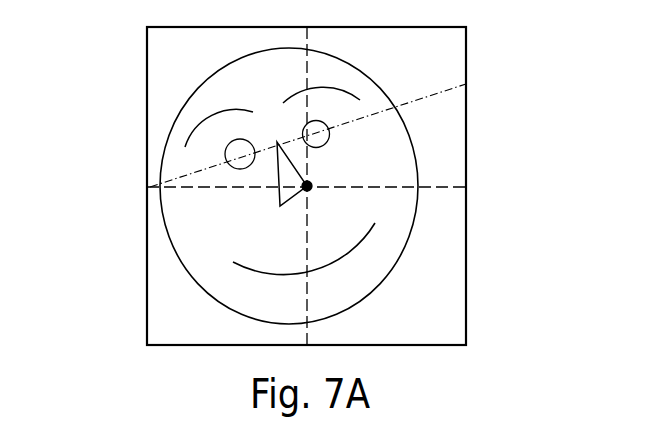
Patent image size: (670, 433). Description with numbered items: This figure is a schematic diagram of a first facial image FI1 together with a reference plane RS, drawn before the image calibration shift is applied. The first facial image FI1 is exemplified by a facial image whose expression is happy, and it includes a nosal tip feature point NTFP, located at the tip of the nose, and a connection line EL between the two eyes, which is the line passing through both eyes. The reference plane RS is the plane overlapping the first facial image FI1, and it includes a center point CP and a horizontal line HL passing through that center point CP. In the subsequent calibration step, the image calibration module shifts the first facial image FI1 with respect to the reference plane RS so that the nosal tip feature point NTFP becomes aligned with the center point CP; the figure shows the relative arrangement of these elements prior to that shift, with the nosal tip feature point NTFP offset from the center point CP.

The first facial image FI1 is at (330, 180).
The reference plane RS is at (147, 212).
The connection line between two eyes EL is at (447, 92).
The horizontal line HL is at (443, 186).
The nosal tip feature point NTFP is at (280, 200).
The center point CP is at (309, 191).